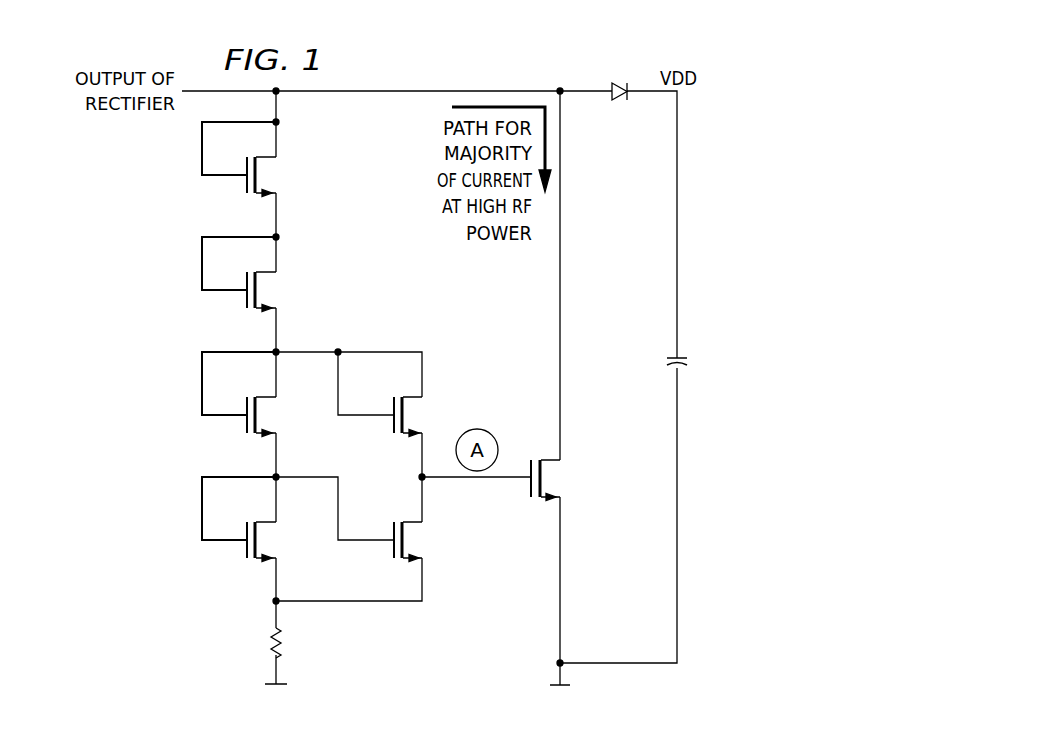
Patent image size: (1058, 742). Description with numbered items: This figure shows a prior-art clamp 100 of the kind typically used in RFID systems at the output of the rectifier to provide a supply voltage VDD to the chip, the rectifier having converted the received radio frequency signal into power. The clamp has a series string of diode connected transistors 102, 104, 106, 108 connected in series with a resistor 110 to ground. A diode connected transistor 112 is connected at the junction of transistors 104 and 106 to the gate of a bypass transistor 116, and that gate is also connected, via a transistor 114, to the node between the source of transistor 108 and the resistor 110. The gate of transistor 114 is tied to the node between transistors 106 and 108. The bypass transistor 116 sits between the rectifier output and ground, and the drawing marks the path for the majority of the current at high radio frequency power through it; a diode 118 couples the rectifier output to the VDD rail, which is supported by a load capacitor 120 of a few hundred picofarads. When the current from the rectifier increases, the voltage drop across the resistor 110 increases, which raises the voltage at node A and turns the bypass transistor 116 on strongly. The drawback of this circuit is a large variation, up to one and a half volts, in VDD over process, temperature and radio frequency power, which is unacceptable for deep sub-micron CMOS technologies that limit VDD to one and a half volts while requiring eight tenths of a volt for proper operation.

The power supply circuit 100 is at (145, 373).
The diode connected transistor 102 is at (245, 185).
The diode connected transistor 104 is at (245, 300).
The diode connected transistor 106 is at (246, 428).
The diode connected transistor 108 is at (246, 552).
The resistor 110 is at (270, 648).
The diode connected transistor 112 is at (392, 428).
The transistor 114 is at (392, 552).
The bypass transistor 116 is at (560, 477).
The diode 118 is at (620, 82).
The load capacitor 120 is at (690, 362).